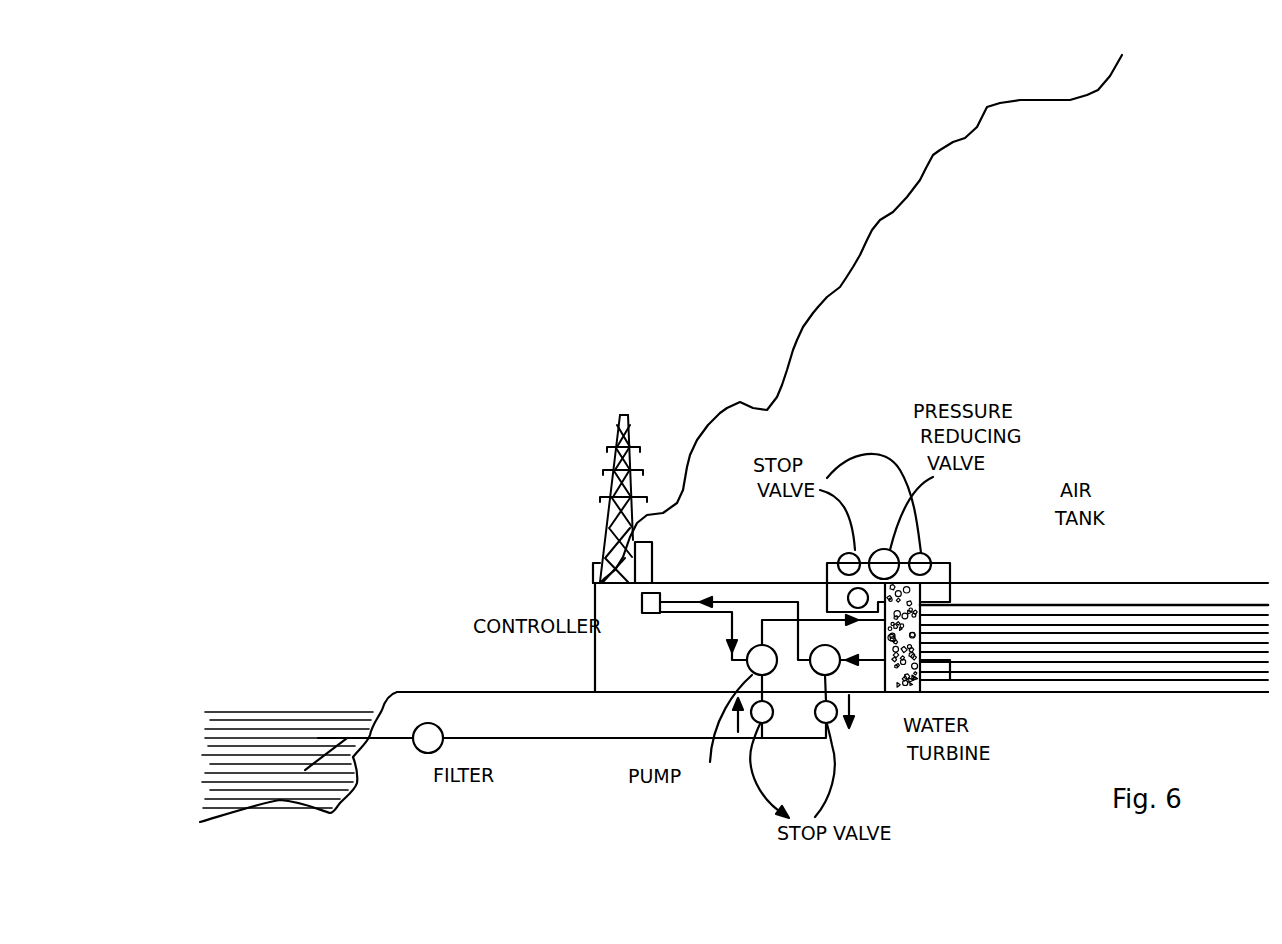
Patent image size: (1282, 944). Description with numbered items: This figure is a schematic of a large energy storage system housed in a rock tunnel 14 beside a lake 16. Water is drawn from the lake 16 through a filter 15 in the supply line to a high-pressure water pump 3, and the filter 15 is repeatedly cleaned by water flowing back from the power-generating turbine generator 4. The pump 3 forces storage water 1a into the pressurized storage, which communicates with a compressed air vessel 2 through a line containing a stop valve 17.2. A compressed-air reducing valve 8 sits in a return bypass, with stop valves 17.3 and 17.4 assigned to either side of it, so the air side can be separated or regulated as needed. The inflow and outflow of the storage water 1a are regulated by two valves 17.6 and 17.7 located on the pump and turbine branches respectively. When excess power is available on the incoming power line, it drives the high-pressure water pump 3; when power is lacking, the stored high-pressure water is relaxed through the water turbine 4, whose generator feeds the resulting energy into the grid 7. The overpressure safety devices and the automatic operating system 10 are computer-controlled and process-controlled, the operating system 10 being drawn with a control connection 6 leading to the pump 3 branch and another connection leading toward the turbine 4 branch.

The lake 16 is at (275, 735).
The filter 15 is at (428, 742).
The automatic operating system 10 is at (650, 605).
The grid 7 is at (735, 601).
The control line to pump 6 is at (685, 612).
The high-pressure water pump 3 is at (762, 667).
The water turbine 4 is at (832, 667).
The valve 17.6 is at (762, 717).
The valve 17.7 is at (826, 717).
The stop valve 17.2 is at (857, 597).
The stop valve 17.3 is at (849, 563).
The compressed-air reducing valve 8 is at (884, 560).
The stop valve 17.4 is at (922, 553).
The compressed air vessel 2 is at (1012, 592).
The storage water 1a is at (1018, 670).
The rock tunnel 14 is at (1164, 556).